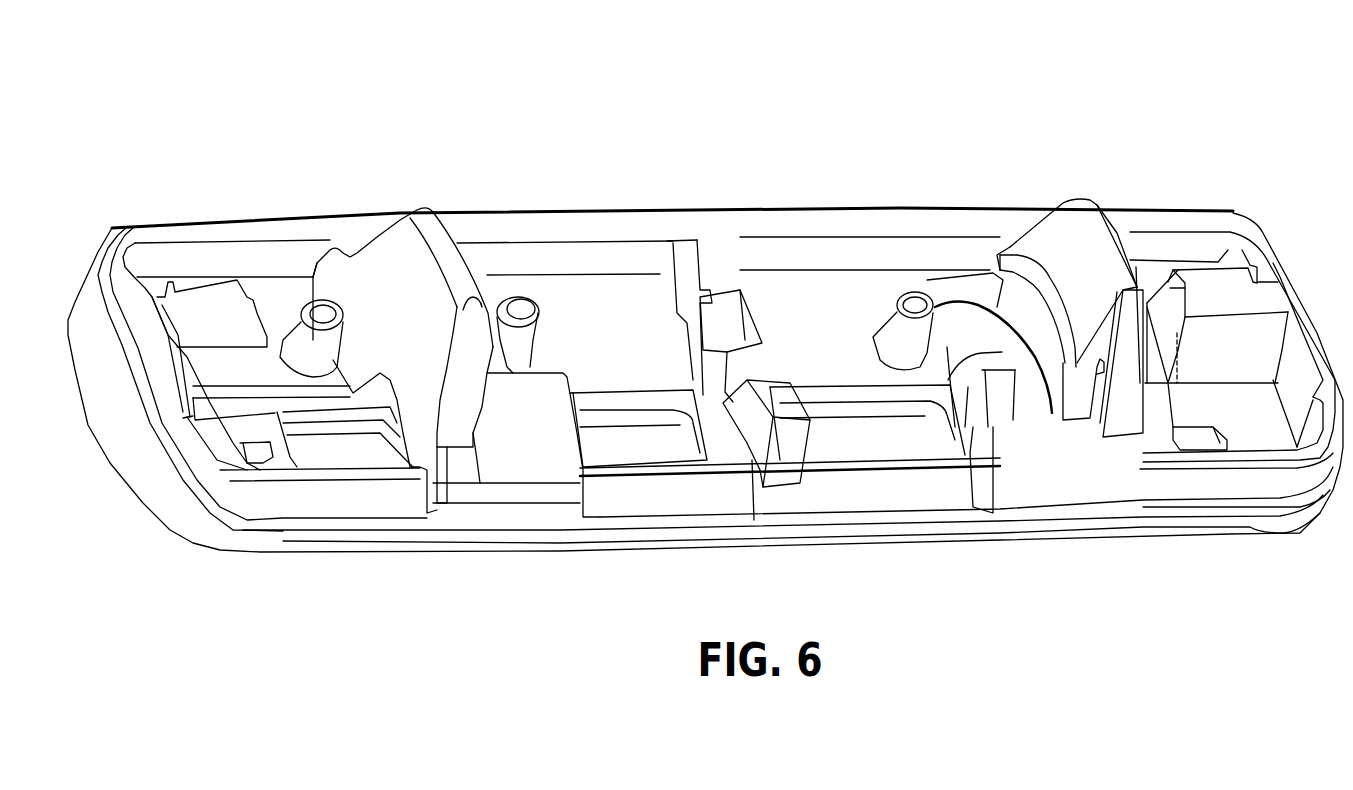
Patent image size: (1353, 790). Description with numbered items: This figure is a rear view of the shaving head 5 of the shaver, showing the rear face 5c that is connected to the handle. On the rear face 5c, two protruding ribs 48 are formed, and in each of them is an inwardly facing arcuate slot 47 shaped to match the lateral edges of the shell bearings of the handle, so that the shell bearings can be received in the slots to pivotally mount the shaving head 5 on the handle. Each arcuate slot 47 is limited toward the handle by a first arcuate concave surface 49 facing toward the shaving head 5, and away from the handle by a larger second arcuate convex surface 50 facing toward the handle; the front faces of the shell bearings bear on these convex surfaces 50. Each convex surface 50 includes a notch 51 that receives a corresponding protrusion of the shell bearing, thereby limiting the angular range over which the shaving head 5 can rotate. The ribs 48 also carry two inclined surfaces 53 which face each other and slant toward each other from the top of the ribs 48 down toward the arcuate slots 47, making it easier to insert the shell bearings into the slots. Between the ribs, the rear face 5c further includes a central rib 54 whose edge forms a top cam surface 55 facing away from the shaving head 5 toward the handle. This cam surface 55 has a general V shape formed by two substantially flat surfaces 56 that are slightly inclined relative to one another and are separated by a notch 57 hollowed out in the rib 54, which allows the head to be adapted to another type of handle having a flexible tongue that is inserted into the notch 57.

The shaving head 5 is at (1255, 186).
The rear face 5c is at (807, 304).
The arcuate slots 47 is at (492, 407).
The protruding ribs 48 is at (445, 255).
The first arcuate concave surface 49 is at (503, 387).
The second arcuate convex surface 50 is at (517, 383).
The notches 51 is at (1047, 339).
The inclined surfaces 53 is at (487, 303).
The central rib 54 is at (696, 330).
The cam surface 55 is at (755, 301).
The flat surfaces 56 is at (733, 297).
The notch 57 is at (753, 520).